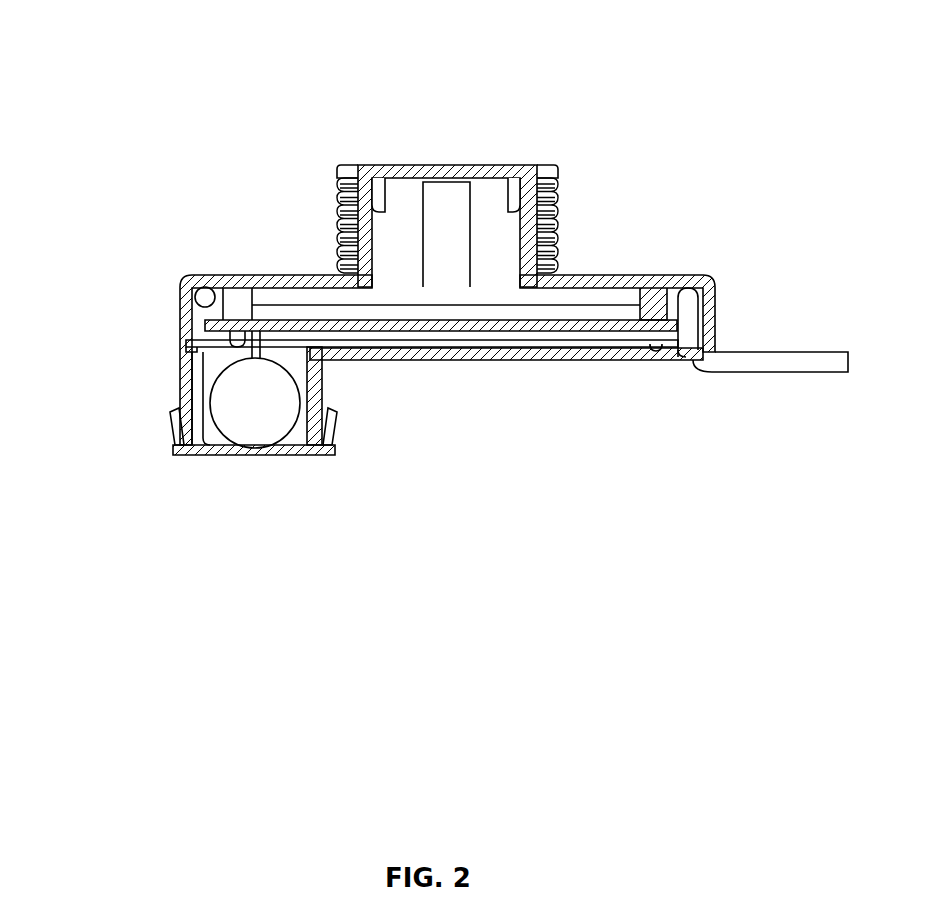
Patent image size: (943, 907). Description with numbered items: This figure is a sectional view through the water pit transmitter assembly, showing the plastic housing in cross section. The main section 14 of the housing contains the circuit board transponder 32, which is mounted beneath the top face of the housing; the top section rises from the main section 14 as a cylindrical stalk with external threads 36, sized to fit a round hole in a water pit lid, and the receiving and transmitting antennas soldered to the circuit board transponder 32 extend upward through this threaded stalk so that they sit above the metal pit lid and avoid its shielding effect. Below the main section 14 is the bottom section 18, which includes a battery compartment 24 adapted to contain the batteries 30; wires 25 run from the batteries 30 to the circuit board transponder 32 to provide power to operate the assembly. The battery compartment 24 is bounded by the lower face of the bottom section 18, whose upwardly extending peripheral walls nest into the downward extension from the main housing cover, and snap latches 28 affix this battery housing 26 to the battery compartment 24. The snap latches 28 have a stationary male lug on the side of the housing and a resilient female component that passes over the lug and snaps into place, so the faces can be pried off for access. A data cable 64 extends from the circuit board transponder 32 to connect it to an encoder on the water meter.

The main section 14 is at (190, 277).
The bottom section 18 is at (322, 402).
The battery compartment 24 is at (215, 366).
The wires 25 is at (242, 351).
The battery housing 26 is at (283, 456).
The snap latches 28 is at (180, 436).
The batteries 30 is at (243, 427).
The circuit board transponder 32 is at (603, 327).
The external threads 36 is at (558, 230).
The data cable 64 is at (782, 363).